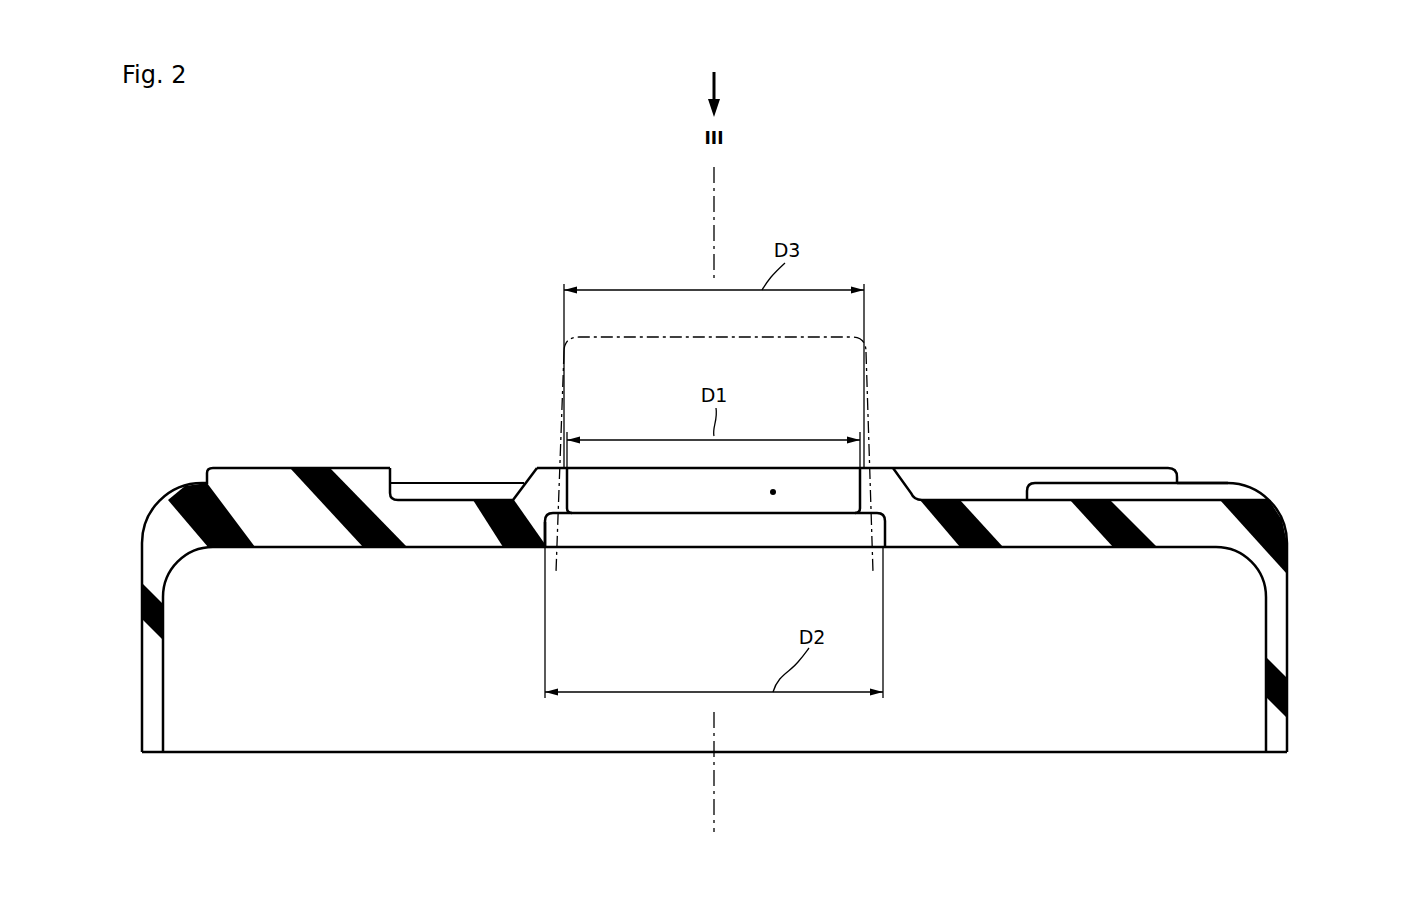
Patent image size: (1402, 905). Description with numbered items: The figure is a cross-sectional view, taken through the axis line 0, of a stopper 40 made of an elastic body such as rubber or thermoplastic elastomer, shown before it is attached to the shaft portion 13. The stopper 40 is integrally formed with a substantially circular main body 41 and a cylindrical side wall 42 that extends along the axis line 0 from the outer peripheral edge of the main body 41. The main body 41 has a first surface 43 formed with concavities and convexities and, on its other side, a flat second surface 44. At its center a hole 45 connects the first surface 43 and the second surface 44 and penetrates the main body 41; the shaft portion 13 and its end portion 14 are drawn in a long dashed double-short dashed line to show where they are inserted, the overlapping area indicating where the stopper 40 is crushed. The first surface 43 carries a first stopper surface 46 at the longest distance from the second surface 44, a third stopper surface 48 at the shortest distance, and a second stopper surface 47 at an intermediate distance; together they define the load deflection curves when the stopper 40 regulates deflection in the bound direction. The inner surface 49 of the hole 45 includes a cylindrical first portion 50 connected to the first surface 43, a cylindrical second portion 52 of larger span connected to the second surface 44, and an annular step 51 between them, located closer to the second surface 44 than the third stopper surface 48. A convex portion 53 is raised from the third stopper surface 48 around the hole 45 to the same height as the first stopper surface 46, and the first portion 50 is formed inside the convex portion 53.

The axis line 0 is at (714, 190).
The shaft portion 13 is at (560, 410).
The end portion 14 is at (576, 360).
The stopper 40 is at (1089, 338).
The main body 41 is at (1058, 535).
The side wall 42 is at (1273, 640).
The first surface 43 is at (366, 467).
The second surface 44 is at (350, 548).
The hole 45 is at (773, 495).
The first stopper surface 46 is at (982, 467).
The second stopper surface 47 is at (1110, 481).
The third stopper surface 48 is at (1205, 482).
The inner surface 49 is at (652, 636).
The first portion 50 is at (569, 492).
The step 51 is at (553, 533).
The second portion 52 is at (548, 549).
The convex portion 53 is at (887, 467).